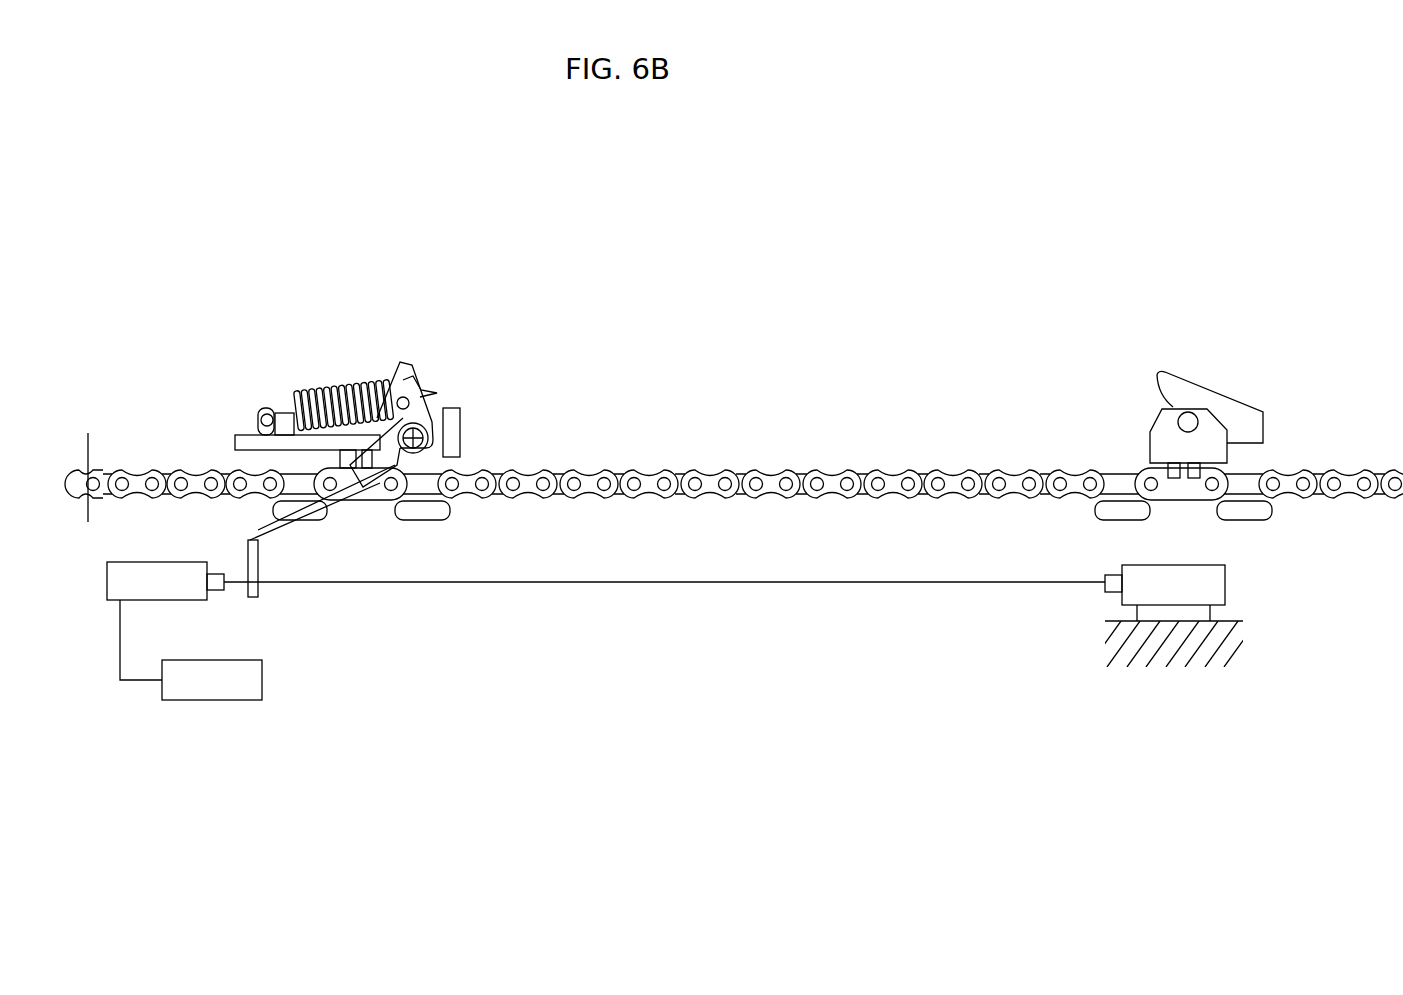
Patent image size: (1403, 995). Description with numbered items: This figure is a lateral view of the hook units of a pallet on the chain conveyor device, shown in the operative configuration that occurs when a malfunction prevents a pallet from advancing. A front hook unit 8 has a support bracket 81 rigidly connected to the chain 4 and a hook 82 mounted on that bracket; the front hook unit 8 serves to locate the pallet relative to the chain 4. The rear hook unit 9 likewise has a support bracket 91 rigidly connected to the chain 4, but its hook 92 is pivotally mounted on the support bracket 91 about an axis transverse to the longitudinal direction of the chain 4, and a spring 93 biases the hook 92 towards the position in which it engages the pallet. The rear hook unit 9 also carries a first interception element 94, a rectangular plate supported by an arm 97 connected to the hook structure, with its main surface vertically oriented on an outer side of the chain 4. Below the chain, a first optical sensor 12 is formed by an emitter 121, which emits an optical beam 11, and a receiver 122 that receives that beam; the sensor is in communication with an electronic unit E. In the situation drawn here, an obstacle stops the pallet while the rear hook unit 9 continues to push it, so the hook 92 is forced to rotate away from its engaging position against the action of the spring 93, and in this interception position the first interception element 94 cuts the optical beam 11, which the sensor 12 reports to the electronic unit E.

The chain 4 is at (683, 469).
The front hook unit 8 is at (1181, 364).
The support bracket 81 is at (1162, 440).
The hook 82 is at (1222, 390).
The rear hook unit 9 is at (321, 428).
The support bracket 91 is at (247, 430).
The hook 92 is at (391, 377).
The spring 93 is at (326, 386).
The first interception element 94 is at (247, 560).
The arm 97 is at (285, 532).
The optical beam 11 is at (665, 584).
The first optical sensor 12 is at (1142, 650).
The emitter 121 is at (1210, 586).
The receiver 122 is at (155, 600).
The electronic unit E is at (230, 682).